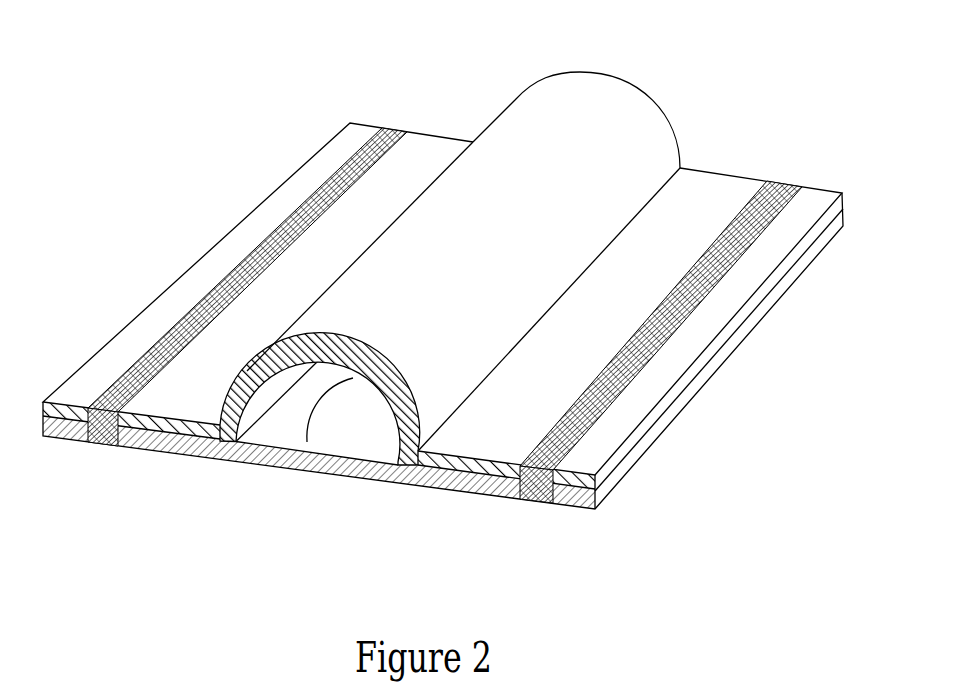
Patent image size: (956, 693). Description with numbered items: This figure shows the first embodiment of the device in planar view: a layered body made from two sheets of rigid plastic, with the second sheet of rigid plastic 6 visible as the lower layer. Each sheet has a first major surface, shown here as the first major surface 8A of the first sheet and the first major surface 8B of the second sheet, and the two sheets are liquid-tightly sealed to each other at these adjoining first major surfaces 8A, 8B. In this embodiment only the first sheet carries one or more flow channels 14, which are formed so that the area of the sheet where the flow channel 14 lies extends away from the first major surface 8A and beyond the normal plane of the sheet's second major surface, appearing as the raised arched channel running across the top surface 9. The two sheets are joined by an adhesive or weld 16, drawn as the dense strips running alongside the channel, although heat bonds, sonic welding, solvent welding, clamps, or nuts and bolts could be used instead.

The second sheet of rigid plastic 6 is at (595, 509).
The first major surface 8A is at (266, 428).
The first major surface 8B is at (362, 373).
The top surface layer 9 is at (640, 398).
The flow channel 14 is at (366, 435).
The adhesive or weld 16 is at (382, 128).